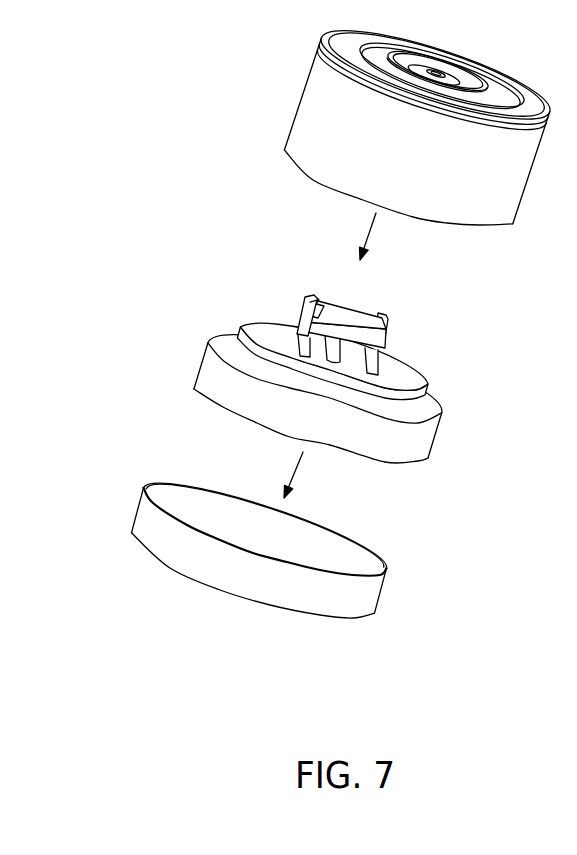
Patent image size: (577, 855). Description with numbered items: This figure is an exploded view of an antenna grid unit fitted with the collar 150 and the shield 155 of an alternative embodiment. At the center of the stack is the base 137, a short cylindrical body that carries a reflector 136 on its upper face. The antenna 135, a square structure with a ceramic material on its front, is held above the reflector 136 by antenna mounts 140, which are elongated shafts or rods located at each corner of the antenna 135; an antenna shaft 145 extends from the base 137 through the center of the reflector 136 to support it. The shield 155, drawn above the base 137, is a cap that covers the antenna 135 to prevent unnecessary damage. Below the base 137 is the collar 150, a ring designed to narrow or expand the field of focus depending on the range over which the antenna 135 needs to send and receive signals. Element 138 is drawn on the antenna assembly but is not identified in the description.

The shield 155 is at (297, 105).
The base 137 is at (206, 357).
The reflector 136 is at (261, 337).
The antenna mount 140 is at (307, 295).
The bar top 138 is at (352, 316).
The antenna 135 is at (398, 340).
The antenna shaft 145 is at (340, 354).
The collar 150 is at (138, 540).